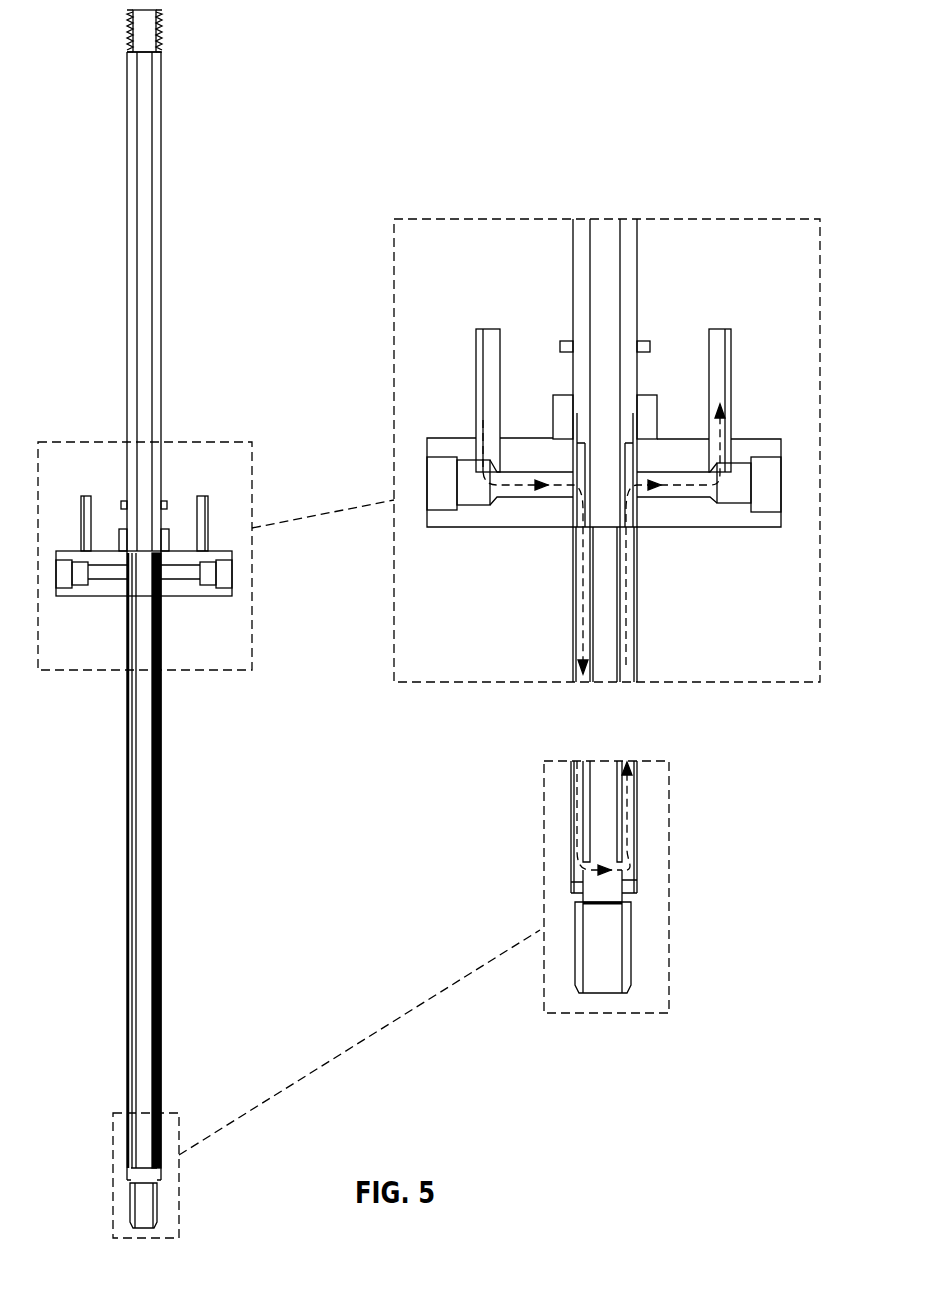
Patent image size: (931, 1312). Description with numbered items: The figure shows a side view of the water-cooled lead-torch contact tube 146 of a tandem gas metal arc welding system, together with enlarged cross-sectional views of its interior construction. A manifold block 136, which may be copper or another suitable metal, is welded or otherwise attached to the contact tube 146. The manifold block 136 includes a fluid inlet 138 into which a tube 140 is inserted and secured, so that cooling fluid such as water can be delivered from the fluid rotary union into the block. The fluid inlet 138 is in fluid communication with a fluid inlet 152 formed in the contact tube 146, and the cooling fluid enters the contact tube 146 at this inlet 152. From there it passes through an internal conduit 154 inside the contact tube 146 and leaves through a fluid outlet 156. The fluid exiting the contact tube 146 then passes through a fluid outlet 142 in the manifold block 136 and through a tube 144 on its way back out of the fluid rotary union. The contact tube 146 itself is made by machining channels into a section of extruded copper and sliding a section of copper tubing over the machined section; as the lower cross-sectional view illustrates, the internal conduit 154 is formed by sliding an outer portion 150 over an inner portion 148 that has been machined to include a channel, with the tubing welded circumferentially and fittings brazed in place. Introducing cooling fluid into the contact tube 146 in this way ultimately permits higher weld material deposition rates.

The manifold block 136 is at (102, 596).
The fluid inlet 138 is at (487, 468).
The tube 140 is at (80, 515).
The fluid outlet 142 is at (730, 447).
The tube 144 is at (209, 513).
The lead-torch contact tube 146 is at (163, 798).
The inner portion 148 is at (573, 893).
The outer portion 150 is at (640, 878).
The fluid inlet 152 is at (572, 505).
The internal conduit 154 is at (632, 818).
The fluid outlet 156 is at (634, 503).